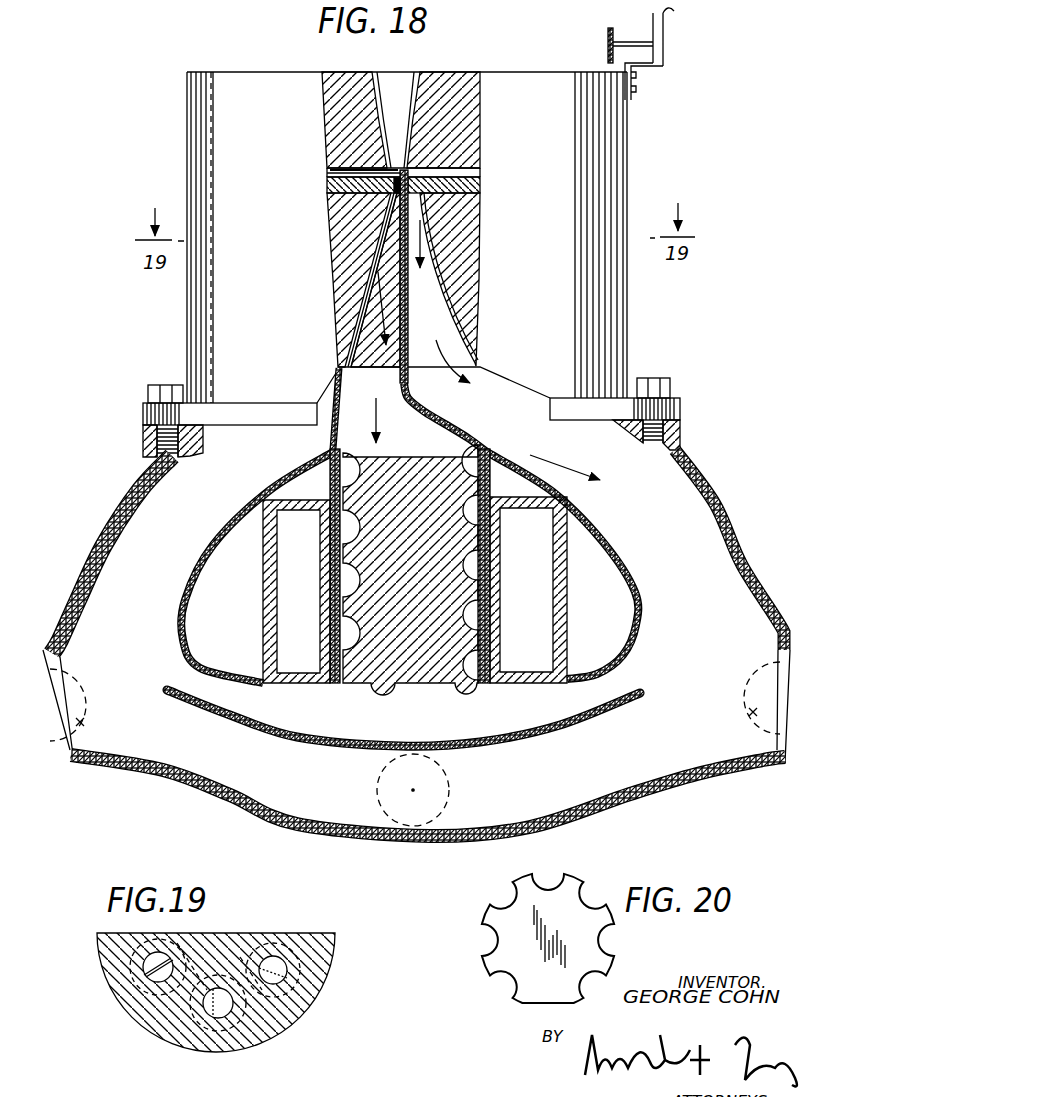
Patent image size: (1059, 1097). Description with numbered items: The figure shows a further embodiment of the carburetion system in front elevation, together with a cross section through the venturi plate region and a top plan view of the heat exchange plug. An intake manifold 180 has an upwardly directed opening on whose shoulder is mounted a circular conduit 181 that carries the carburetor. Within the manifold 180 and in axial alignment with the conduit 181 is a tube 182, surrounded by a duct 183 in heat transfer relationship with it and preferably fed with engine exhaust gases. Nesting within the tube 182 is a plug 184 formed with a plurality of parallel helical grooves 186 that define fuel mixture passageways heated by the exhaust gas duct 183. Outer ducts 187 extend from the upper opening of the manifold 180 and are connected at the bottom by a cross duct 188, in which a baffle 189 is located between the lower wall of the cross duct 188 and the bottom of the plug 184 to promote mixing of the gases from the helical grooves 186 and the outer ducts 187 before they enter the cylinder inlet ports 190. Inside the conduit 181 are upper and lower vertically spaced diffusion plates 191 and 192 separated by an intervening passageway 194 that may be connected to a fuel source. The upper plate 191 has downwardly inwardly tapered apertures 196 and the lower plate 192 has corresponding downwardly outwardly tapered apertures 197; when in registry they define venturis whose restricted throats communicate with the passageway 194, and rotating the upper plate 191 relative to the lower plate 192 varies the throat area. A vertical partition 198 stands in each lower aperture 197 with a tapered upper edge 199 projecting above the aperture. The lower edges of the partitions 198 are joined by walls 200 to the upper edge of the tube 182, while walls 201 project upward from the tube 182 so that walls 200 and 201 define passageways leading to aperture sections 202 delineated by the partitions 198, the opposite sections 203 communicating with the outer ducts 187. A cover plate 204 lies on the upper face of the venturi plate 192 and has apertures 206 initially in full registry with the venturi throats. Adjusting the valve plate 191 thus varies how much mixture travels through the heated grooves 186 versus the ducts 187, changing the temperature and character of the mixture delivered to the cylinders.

In FIG. 18, the manifold 180 is at (718, 488).
In FIG. 18, the circular conduit 181 is at (605, 118).
In FIG. 18, the tube 182 is at (481, 480).
In FIG. 18, the duct 183 is at (555, 578).
In FIG. 18, the plug 184 is at (440, 581).
In FIG. 20, the plug 184 is at (615, 959).
In FIG. 18, the helical grooves 186 is at (347, 477).
In FIG. 18, the outer ducts 187 is at (724, 557).
In FIG. 18, the cross duct 188 is at (307, 803).
In FIG. 18, the baffle 189 is at (534, 737).
In FIG. 18, the cylinder inlet ports 190 is at (74, 721).
In FIG. 18, the upper diffusion plate 191 is at (462, 106).
In FIG. 18, the lower diffusion plate 192 is at (470, 233).
In FIG. 18, the intervening passageway 194 is at (327, 174).
In FIG. 18, the downwardly inwardly tapered apertures 196 is at (402, 82).
In FIG. 18, the downwardly outwardly tapered apertures 197 is at (434, 294).
In FIG. 18, the vertical partition 198 is at (397, 277).
In FIG. 19, the vertical partition 198 is at (272, 975).
In FIG. 18, the tapered upper edge 199 is at (396, 201).
In FIG. 18, the walls 200 is at (437, 418).
In FIG. 18, the walls 201 is at (334, 427).
In FIG. 18, the aperture sections 202 is at (388, 302).
In FIG. 19, the aperture sections 202 is at (277, 980).
In FIG. 18, the opposite sections 203 is at (445, 322).
In FIG. 19, the opposite sections 203 is at (275, 965).
In FIG. 18, the cover plate 204 is at (482, 185).
In FIG. 18, the apertures 206 is at (483, 157).